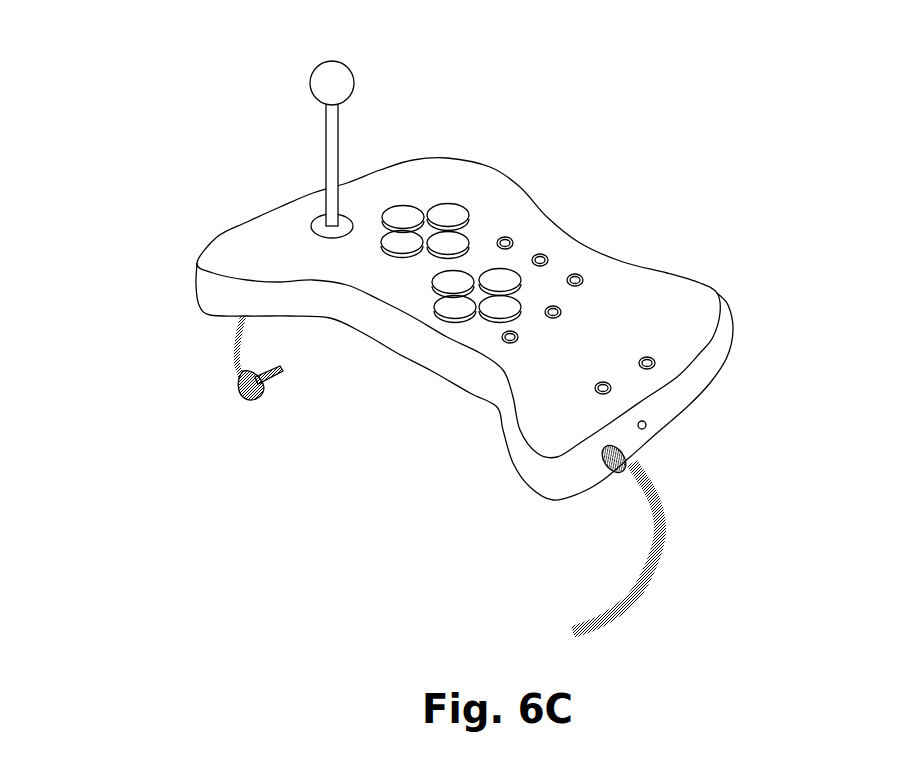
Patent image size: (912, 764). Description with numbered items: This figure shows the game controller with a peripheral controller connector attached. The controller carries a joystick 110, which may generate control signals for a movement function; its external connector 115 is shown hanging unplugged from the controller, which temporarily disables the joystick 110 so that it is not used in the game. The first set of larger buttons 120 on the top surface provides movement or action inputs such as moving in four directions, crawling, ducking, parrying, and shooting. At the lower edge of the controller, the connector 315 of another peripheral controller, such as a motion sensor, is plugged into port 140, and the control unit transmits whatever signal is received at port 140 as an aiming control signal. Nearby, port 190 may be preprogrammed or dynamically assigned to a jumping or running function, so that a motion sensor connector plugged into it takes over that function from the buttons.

The joystick 110 is at (272, 73).
The external connector 115 is at (283, 436).
The first set of larger buttons 120 is at (477, 213).
The port 140 is at (622, 452).
The port 190 is at (655, 420).
The connector 315 is at (627, 460).